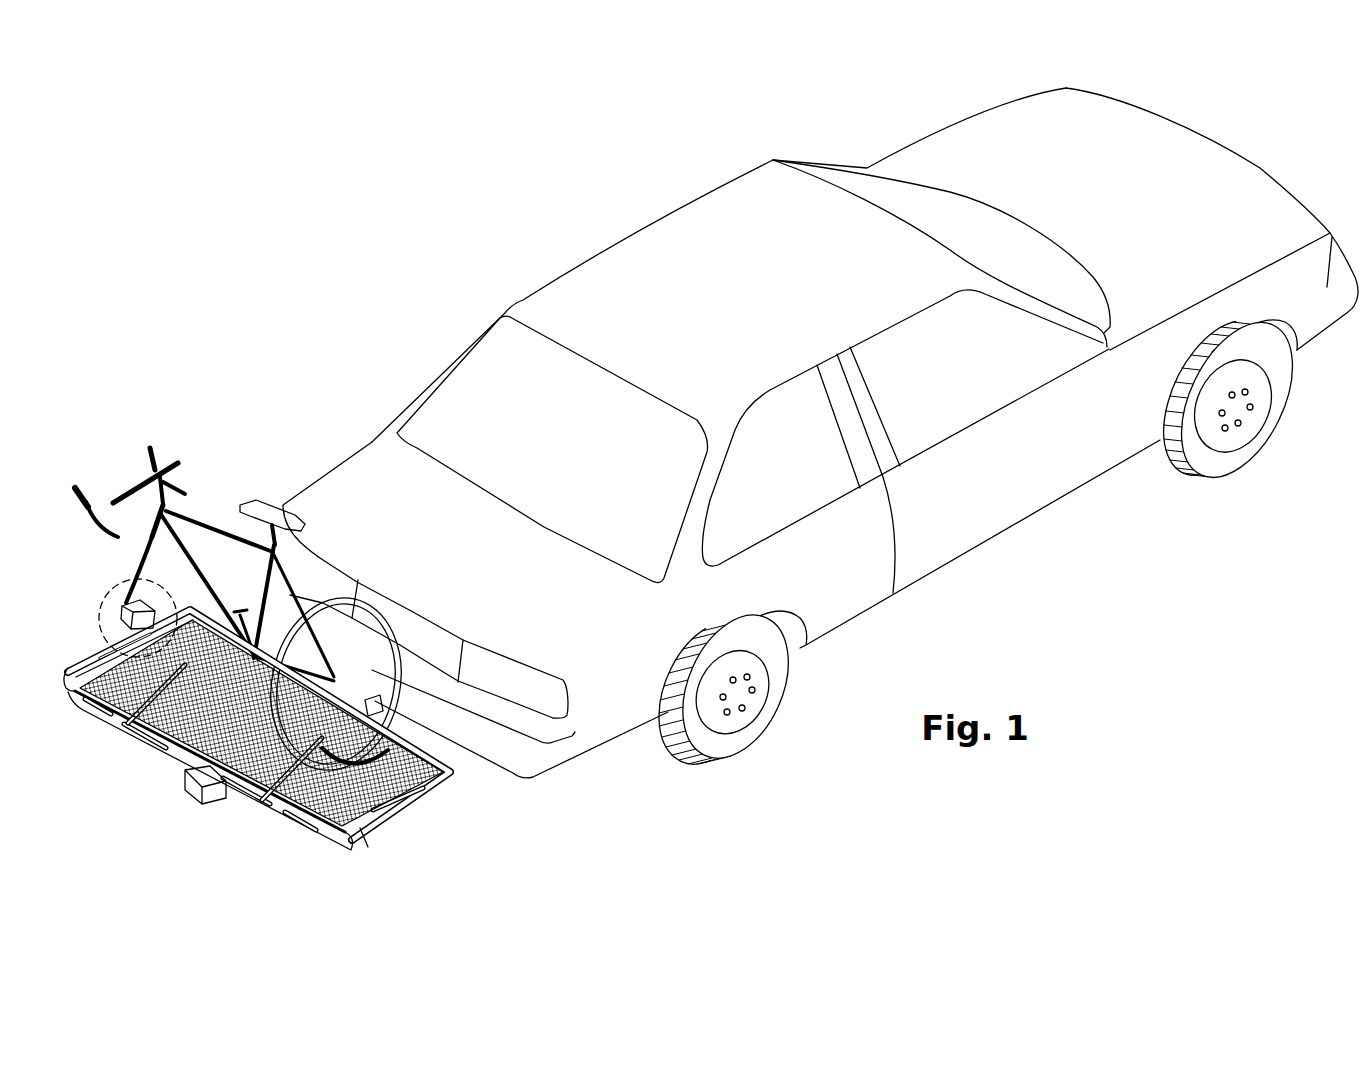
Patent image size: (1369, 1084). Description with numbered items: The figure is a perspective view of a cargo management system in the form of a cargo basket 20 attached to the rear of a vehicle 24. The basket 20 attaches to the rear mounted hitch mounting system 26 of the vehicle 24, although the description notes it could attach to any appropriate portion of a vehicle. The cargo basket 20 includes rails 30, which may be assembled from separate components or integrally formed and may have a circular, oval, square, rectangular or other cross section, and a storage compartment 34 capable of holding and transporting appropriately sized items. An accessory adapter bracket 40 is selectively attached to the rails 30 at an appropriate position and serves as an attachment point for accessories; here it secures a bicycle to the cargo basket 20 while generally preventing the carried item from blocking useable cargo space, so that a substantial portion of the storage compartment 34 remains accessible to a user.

The cargo basket 20 is at (347, 848).
The vehicle 24 is at (594, 286).
The rear mounted hitch mounting system 26 is at (377, 700).
The rails 30 is at (90, 648).
The storage compartment 34 is at (408, 790).
The accessory adapter bracket 40 is at (120, 608).